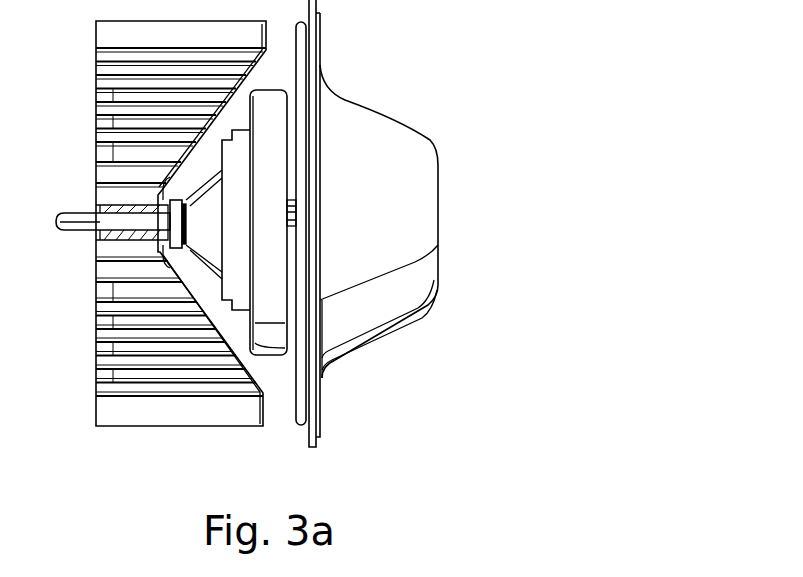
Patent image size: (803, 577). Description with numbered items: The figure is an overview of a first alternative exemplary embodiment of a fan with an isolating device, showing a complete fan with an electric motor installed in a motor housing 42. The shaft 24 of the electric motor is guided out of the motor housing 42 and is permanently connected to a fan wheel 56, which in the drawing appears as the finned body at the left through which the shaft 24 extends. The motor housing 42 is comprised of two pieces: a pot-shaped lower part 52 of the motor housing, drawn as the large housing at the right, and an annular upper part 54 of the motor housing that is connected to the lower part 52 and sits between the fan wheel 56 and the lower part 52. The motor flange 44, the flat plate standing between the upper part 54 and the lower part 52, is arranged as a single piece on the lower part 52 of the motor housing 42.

The shaft 24 is at (82, 232).
The motor housing 42 is at (324, 374).
The motor flange 44 is at (303, 48).
The lower part of the motor housing 52 is at (415, 181).
The upper part of the motor housing 54 is at (273, 122).
The fan wheel 56 is at (173, 368).